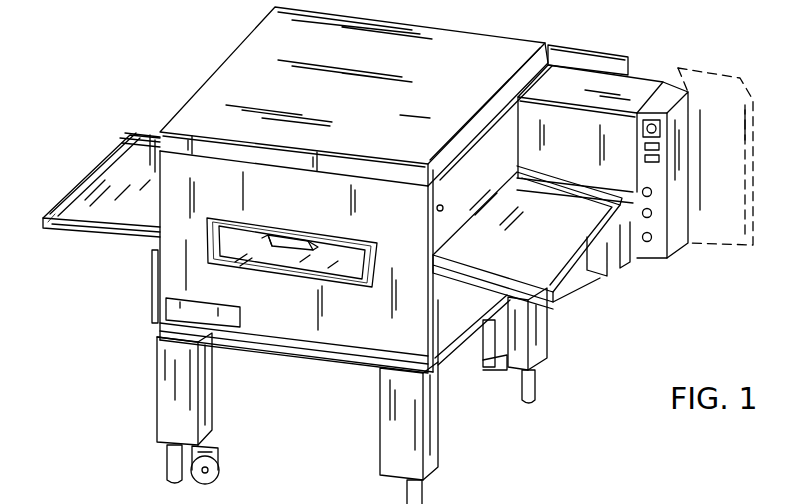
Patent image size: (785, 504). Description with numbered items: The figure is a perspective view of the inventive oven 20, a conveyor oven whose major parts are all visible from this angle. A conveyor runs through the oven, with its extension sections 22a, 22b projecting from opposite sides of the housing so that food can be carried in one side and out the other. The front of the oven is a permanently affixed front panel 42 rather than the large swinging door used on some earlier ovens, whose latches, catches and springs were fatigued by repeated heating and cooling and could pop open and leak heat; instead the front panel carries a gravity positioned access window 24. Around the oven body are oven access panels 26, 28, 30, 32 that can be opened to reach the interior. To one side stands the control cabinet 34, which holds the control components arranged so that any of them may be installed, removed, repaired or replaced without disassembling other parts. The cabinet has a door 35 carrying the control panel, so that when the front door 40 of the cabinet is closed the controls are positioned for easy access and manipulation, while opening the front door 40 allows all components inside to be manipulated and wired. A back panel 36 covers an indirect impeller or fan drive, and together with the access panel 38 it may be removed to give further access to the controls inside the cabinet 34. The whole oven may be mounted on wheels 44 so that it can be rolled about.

The conveyor oven 20 is at (498, 17).
The infeed conveyor extension tray 22a is at (82, 238).
The outfeed conveyor extension tray 22b is at (565, 290).
The access window 24 is at (317, 263).
The oven access panel 26 is at (153, 163).
The oven access panel 28 is at (154, 301).
The oven access panel 30 is at (478, 160).
The oven access panel 32 is at (453, 320).
The control cabinet 34 is at (572, 162).
The door having a control panel 35 is at (653, 250).
The back panel 36 is at (607, 62).
The access panel 38 is at (600, 262).
The front door 40 is at (673, 238).
The front panel 42 is at (302, 213).
The wheels 44 is at (217, 465).